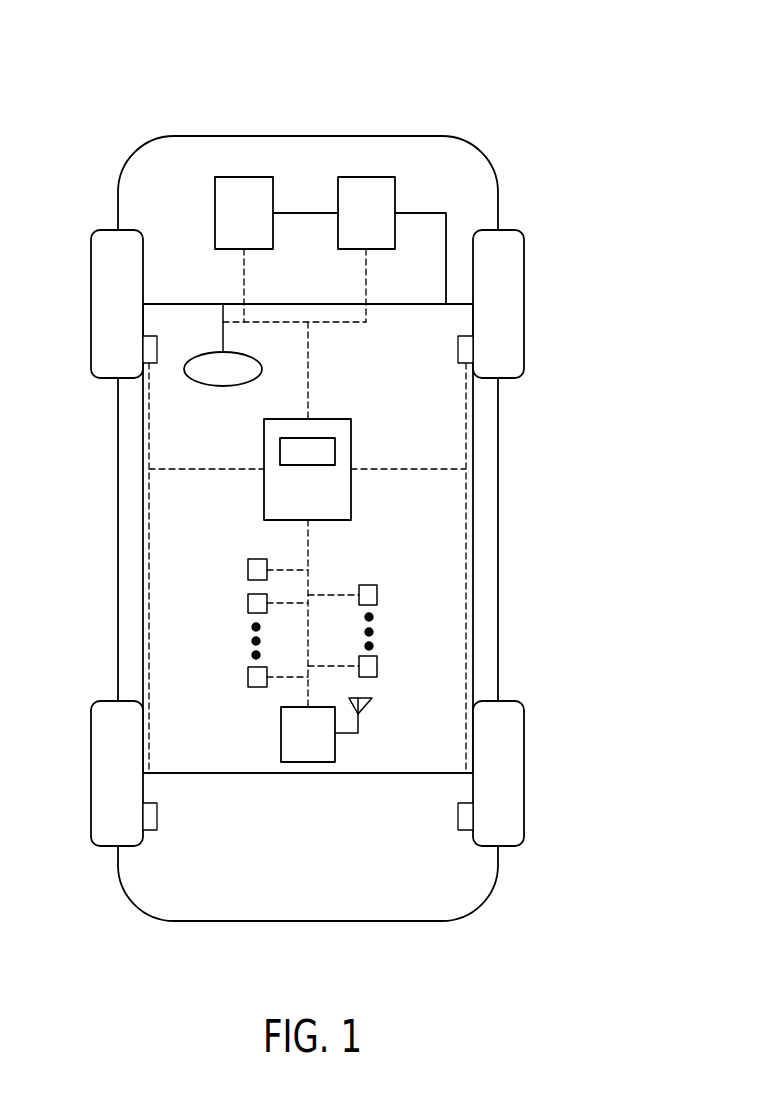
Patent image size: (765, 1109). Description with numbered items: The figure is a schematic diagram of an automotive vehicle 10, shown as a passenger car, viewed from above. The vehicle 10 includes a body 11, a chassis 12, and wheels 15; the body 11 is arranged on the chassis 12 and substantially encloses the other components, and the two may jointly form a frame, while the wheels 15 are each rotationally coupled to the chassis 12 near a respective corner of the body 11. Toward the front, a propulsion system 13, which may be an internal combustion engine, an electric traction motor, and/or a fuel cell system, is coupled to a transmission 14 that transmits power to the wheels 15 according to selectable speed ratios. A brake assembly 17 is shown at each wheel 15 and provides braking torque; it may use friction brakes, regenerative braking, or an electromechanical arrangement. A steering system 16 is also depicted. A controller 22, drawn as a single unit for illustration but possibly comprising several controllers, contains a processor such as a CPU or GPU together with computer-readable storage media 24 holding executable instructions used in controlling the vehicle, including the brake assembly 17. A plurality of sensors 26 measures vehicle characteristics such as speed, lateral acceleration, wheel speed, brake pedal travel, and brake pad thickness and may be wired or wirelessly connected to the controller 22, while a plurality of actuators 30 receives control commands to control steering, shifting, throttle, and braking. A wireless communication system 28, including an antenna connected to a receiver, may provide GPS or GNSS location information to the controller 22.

The vehicle 10 is at (494, 82).
The body 11 is at (498, 203).
The chassis 12 is at (307, 773).
The propulsion system 13 is at (215, 212).
The transmission 14 is at (395, 193).
The wheels 15 is at (91, 305).
The steering system 16 is at (223, 387).
The brake assembly 17 is at (157, 352).
The controller 22 is at (351, 458).
The processor 24 is at (320, 440).
The sensors 26 is at (248, 567).
The wireless communication system 28 is at (281, 733).
The actuators 30 is at (377, 595).